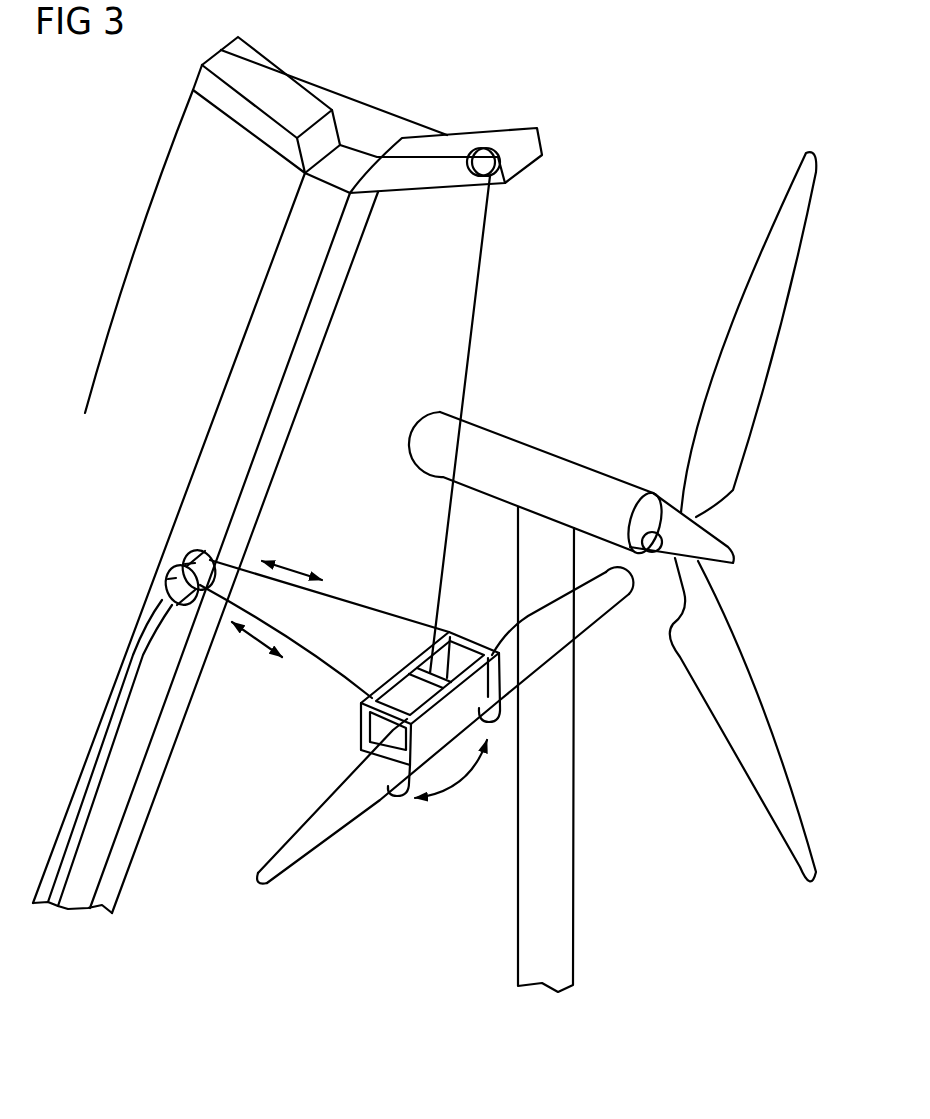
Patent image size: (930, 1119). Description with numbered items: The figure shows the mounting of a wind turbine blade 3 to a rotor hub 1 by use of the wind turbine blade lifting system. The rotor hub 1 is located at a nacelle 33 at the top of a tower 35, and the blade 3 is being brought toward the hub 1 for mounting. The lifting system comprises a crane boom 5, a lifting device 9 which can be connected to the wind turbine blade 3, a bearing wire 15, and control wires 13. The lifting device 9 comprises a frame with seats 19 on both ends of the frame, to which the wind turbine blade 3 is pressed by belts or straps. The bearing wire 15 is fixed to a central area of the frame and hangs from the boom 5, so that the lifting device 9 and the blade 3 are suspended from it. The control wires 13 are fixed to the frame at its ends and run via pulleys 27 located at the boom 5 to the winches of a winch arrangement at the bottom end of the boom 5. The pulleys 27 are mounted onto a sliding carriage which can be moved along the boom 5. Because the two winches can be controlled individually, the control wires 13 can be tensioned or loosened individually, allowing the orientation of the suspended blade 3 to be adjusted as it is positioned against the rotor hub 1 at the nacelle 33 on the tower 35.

The rotor hub 1 is at (728, 547).
The wind turbine blade 3 is at (603, 598).
The crane boom 5 is at (316, 357).
The lifting device 9 is at (468, 627).
The control wires 13 is at (336, 596).
The bearing wire 15 is at (480, 282).
The seats 19 is at (430, 656).
The pulleys 27 is at (160, 578).
The nacelle 33 is at (553, 458).
The tower 35 is at (565, 893).